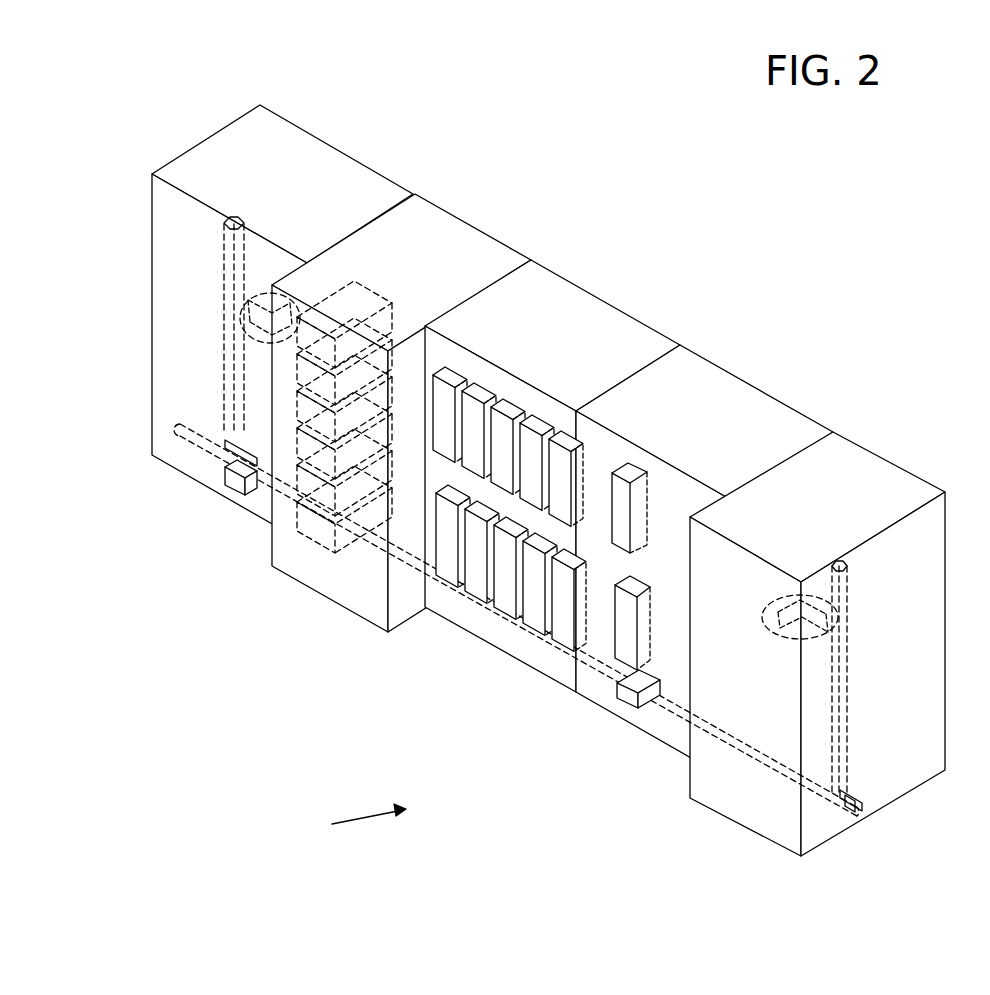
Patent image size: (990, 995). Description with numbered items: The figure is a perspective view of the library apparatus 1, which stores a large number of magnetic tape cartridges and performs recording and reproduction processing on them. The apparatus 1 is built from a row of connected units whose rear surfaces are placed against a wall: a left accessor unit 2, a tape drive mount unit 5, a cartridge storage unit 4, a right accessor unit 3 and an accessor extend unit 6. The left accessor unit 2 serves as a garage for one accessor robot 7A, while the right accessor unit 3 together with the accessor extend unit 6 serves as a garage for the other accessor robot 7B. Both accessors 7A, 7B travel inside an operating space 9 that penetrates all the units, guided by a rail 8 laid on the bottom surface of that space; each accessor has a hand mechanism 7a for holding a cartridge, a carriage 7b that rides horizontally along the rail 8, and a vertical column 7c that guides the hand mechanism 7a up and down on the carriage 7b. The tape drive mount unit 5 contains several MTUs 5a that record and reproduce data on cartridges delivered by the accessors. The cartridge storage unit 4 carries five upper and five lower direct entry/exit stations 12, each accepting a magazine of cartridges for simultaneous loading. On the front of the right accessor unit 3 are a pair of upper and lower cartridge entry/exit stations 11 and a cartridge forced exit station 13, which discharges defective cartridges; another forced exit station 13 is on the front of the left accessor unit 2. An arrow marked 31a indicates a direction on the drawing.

The library apparatus 1 is at (548, 472).
The left accessor unit (LAU) 2 is at (312, 160).
The right accessor unit (RAU) 3 is at (773, 417).
The cartridge storage unit (CSU) 4 is at (640, 340).
The tape drive mount unit (TMU) 5 is at (470, 252).
The MTU 5a is at (367, 307).
The accessor extend unit (AEU) 6 is at (890, 478).
The accessor robot 7A is at (223, 237).
The accessor robot 7B is at (847, 587).
The hand mechanism 7a is at (263, 337).
The carriage 7b is at (202, 443).
The vertical column 7c is at (230, 367).
The rail 8 is at (725, 740).
The operating space (accessor passage) 9 is at (727, 708).
The cartridge entry/exit station (CAS) 11 is at (622, 490).
The cartridge direct entry/exit station (DEE) 12 is at (477, 407).
The cartridge forced exit station (FES) 13 is at (242, 477).
The conveying direction 31a is at (330, 824).